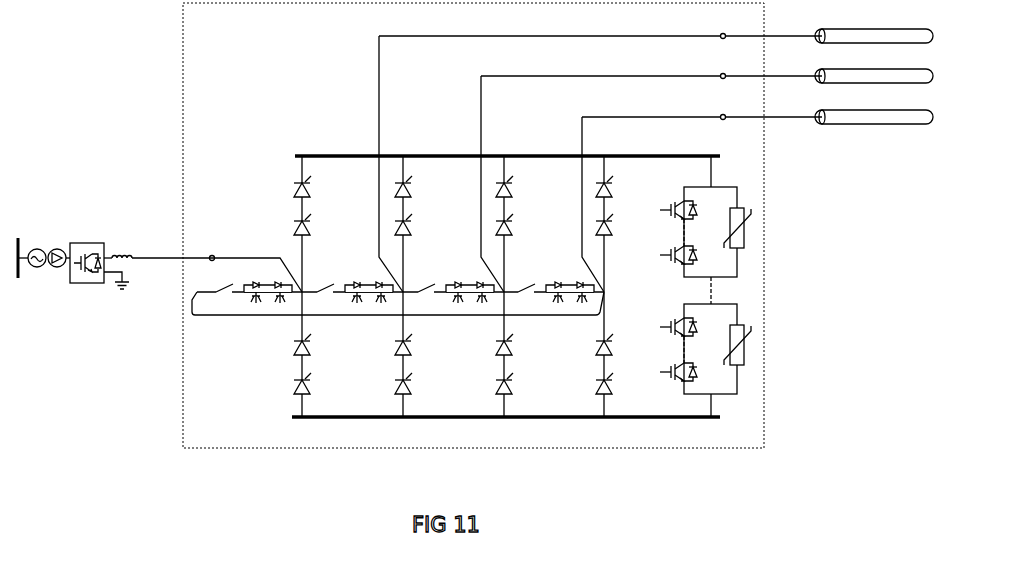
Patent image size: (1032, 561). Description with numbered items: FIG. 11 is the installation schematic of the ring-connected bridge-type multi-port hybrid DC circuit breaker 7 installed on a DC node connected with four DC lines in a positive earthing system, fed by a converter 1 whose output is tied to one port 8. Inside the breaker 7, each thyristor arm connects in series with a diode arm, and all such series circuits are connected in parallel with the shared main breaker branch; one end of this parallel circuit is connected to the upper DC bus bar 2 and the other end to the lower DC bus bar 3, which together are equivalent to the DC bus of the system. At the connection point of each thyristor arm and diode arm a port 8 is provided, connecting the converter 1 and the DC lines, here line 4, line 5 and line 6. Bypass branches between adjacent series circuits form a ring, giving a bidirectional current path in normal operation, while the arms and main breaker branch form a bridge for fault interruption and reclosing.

The converter 1 is at (87, 269).
The upper DC bus bar 2 is at (518, 145).
The lower DC bus bar 3 is at (514, 431).
The line 1 4 is at (874, 25).
The line 2 5 is at (874, 65).
The line 3 6 is at (874, 106).
The multi-port hybrid DC circuit breaker 7 is at (764, 288).
The port 8 is at (477, 152).